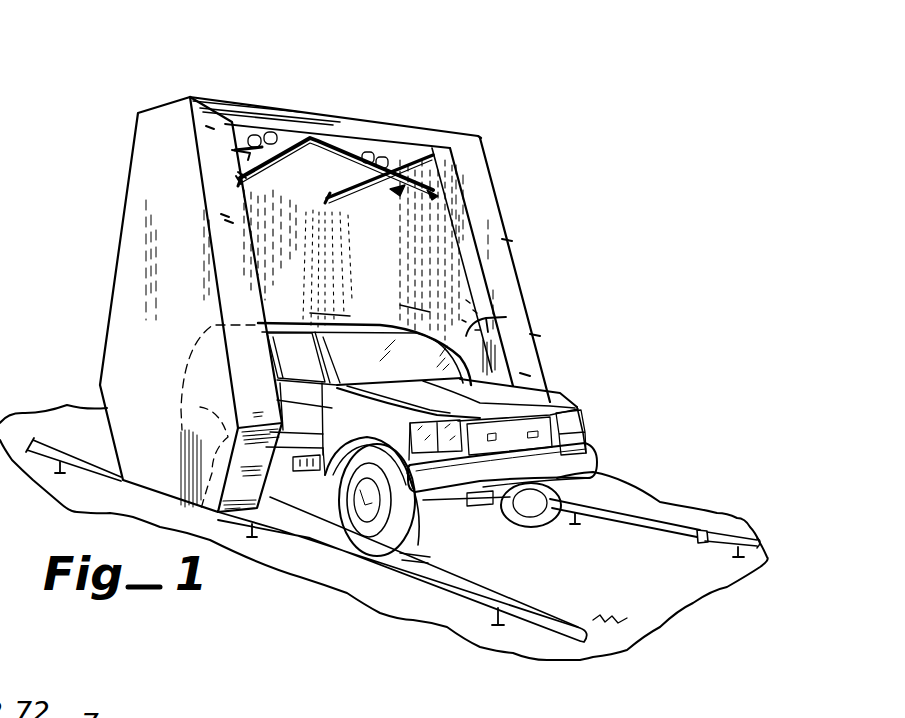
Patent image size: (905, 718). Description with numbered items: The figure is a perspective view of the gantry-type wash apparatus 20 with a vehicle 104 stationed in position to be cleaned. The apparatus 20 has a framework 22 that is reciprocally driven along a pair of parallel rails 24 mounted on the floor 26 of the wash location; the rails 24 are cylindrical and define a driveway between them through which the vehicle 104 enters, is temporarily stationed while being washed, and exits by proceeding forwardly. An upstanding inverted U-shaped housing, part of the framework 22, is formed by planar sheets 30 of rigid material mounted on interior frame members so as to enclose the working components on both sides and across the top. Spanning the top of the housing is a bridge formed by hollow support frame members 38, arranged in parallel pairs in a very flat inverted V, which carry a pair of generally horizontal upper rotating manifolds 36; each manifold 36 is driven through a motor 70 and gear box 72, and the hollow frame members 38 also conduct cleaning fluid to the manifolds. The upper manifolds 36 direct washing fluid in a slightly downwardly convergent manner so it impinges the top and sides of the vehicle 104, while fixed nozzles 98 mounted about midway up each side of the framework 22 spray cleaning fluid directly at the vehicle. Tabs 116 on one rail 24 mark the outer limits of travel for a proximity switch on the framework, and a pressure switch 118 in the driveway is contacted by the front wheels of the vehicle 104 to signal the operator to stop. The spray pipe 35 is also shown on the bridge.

The wash apparatus 20 is at (573, 197).
The framework 22 is at (463, 282).
The parallel rails 24 is at (623, 487).
The floor 26 is at (650, 593).
The planar sheets 30 is at (213, 167).
The spray manifold 35 is at (337, 178).
The upper rotating manifolds 36 is at (366, 170).
The support frame members 38 is at (237, 147).
The motor 70 is at (250, 140).
The gear box 72 is at (233, 147).
The stationary nozzles 98 is at (482, 336).
The vehicle 104 is at (586, 428).
The tabs 116 is at (705, 532).
The pressure switch 118 is at (430, 560).